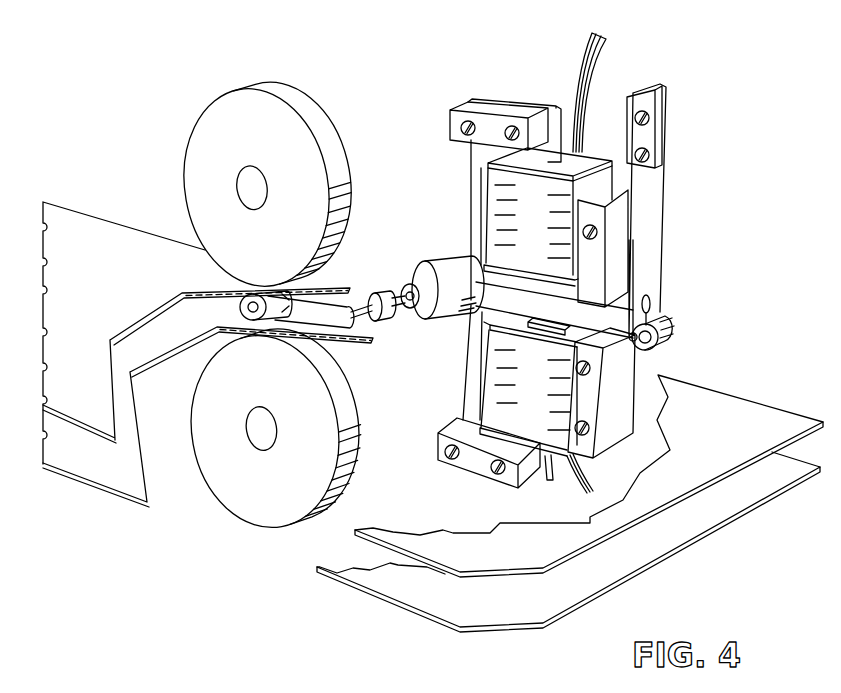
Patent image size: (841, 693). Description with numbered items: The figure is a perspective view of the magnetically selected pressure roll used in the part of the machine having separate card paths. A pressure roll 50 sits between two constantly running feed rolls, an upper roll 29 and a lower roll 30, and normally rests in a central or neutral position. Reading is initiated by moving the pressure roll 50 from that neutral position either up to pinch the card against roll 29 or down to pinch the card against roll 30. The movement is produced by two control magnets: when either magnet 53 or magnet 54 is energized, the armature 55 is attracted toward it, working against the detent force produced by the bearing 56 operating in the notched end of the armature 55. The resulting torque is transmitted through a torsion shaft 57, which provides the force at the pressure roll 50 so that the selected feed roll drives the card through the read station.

The constantly running roll 29 is at (321, 110).
The constantly running roll 30 is at (252, 524).
The pressure roll 50 is at (212, 337).
The control magnet 53 is at (590, 152).
The control magnet 54 is at (470, 402).
The armature 55 is at (648, 353).
The bearing 56 is at (667, 315).
The torsion shaft 57 is at (414, 322).